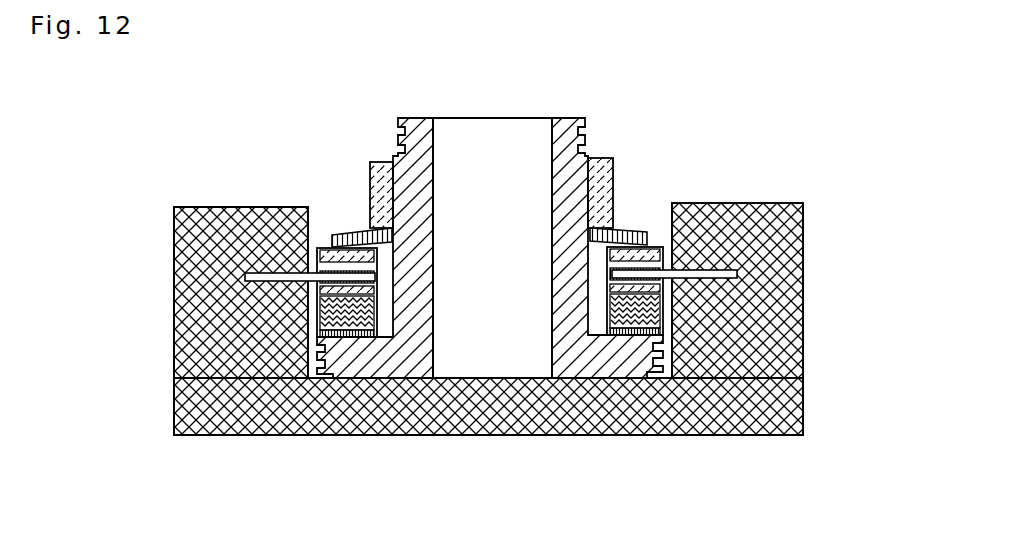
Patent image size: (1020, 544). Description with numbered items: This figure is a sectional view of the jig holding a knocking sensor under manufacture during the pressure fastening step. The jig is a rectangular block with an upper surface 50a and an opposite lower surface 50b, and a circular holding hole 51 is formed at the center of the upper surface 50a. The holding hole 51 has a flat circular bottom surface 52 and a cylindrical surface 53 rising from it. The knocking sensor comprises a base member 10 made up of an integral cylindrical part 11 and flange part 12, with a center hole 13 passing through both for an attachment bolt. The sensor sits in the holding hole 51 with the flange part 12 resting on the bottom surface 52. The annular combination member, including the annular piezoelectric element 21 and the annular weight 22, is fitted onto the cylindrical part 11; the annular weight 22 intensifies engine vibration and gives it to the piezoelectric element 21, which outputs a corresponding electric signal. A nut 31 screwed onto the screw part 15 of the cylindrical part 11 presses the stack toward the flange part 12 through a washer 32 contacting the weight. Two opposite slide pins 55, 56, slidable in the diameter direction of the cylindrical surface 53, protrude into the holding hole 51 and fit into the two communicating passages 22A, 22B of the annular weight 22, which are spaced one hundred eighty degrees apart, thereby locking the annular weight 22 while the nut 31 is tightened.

The base member 10 is at (353, 373).
The cylindrical part 11 is at (552, 158).
The flange part 12 is at (393, 370).
The center hole 13 is at (552, 128).
The screw part 15 is at (393, 188).
The annular piezoelectric element 21 is at (370, 316).
The annular weight 22 is at (367, 255).
The communicating passage 22A is at (370, 276).
The communicating passage 22B is at (607, 273).
The nut 31 is at (613, 160).
The washer 32 is at (630, 232).
The upper surface 50a is at (783, 202).
The lower surface 50b is at (745, 432).
The holding hole 51 is at (665, 207).
The bottom surface 52 is at (457, 378).
The cylindrical surface 53 is at (307, 214).
The slide pin 55 is at (245, 277).
The slide pin 56 is at (737, 274).